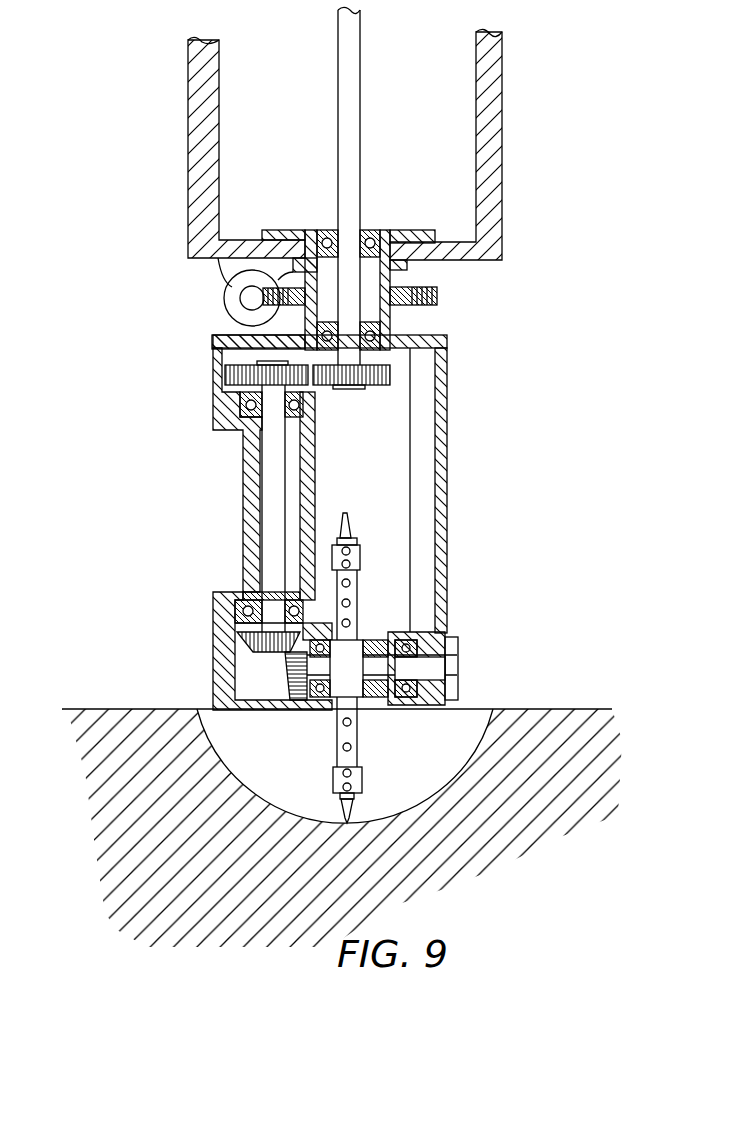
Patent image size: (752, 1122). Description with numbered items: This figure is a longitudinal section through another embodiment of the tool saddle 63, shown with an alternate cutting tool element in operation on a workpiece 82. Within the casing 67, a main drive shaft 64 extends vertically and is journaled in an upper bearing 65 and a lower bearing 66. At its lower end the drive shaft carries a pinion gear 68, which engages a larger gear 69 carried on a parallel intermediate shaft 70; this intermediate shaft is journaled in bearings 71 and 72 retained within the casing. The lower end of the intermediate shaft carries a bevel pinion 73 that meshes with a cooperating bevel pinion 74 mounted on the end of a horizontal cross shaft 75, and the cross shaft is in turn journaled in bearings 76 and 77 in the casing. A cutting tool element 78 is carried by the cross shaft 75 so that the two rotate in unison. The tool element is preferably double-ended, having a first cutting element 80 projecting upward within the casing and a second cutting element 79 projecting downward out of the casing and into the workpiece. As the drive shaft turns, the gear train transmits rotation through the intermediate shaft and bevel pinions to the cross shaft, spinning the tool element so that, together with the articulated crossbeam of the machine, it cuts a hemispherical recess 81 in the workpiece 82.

The tool saddle 63 is at (120, 372).
The main drive shaft 64 is at (348, 136).
The bearing 65 is at (363, 235).
The bearing 66 is at (385, 340).
The casing 67 is at (500, 132).
The pinion gear 68 is at (363, 387).
The gear 69 is at (227, 371).
The intermediate shaft 70 is at (272, 490).
The bearing 71 is at (240, 408).
The bearing 72 is at (240, 606).
The bevel pinion 73 is at (240, 650).
The cooperating bevel pinion 74 is at (305, 702).
The bearings 75 is at (320, 702).
The bearing 76 is at (349, 650).
The bearing 77 is at (437, 640).
The cutting tool element 78 is at (333, 762).
The cutting element 79 is at (352, 812).
The cutting element 80 is at (347, 527).
The hemispherical recess 81 is at (467, 770).
The workpiece 82 is at (500, 708).